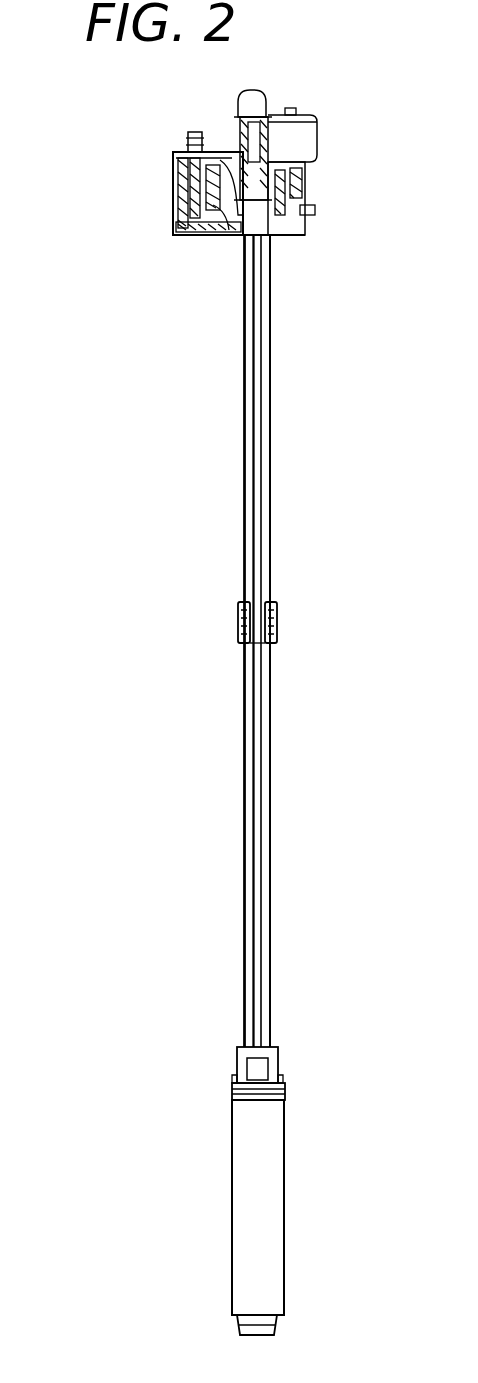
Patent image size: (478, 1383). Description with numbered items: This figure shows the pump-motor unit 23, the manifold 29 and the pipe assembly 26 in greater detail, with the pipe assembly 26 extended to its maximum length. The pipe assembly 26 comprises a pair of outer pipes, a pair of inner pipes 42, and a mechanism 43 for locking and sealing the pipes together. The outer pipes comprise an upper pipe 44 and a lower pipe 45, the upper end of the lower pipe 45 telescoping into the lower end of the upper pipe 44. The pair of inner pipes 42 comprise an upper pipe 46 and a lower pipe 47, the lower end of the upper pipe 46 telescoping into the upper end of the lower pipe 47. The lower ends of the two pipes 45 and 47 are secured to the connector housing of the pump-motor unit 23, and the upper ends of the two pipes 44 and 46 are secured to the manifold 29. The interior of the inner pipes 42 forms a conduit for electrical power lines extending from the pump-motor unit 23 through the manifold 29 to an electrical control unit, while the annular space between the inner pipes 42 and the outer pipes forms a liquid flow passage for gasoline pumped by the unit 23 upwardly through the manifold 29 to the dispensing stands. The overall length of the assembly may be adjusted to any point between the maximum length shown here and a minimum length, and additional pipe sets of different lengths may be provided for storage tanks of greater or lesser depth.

The pump-motor unit 23 is at (225, 1200).
The pipe assembly 26 is at (210, 455).
The manifold 29 is at (165, 194).
The pair of inner pipes 42 is at (245, 801).
The mechanism for locking and sealing the pipes together 43 is at (225, 623).
The upper pipe 44 is at (243, 298).
The lower pipe 45 is at (245, 887).
The upper pipe 46 is at (253, 364).
The lower pipe 47 is at (252, 732).